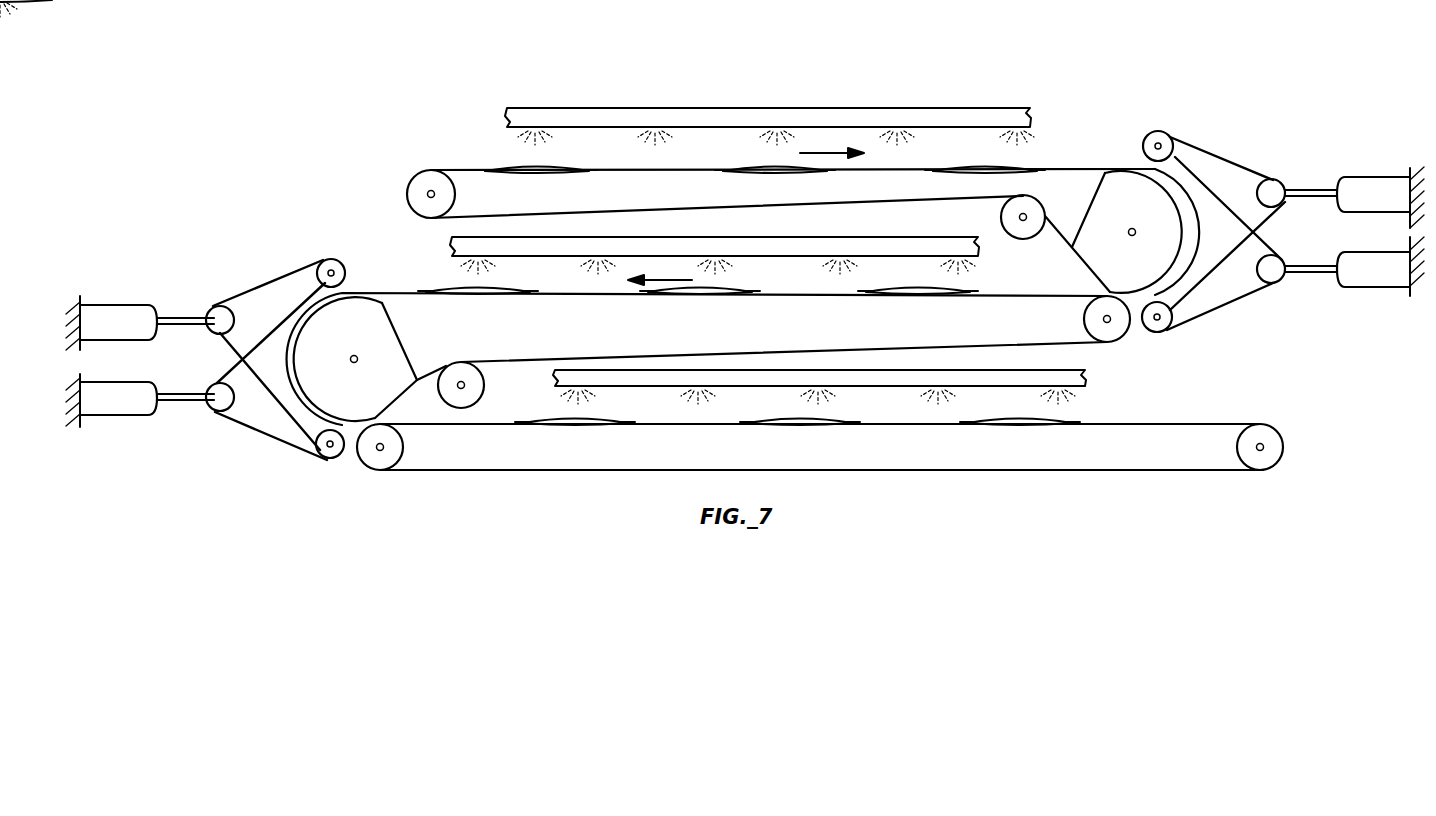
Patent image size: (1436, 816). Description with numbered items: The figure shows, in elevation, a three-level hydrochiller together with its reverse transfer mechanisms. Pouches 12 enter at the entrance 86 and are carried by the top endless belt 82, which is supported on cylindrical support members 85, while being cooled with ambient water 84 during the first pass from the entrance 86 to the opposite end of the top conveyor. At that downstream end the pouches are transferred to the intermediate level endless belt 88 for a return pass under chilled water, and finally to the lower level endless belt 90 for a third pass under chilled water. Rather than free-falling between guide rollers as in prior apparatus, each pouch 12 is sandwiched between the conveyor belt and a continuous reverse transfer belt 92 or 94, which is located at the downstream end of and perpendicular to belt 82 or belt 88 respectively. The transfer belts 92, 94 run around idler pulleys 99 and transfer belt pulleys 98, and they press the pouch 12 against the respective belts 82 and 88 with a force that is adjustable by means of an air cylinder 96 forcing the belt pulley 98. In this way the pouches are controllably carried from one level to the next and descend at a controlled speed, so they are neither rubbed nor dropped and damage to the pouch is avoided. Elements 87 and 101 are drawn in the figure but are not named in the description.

The pouch 12 is at (729, 168).
The endless belt 82 is at (457, 170).
The ambient water 84 is at (617, 107).
The cylindrical support member 85 is at (344, 308).
The entrance 86 is at (452, 121).
The roller flat section 87 is at (386, 346).
The intermediate level endless belt 88 is at (848, 300).
The lower level endless belt 90 is at (503, 426).
The reverse transfer belt 92 is at (273, 280).
The reverse transfer belt 94 is at (214, 364).
The air cylinder 96 is at (118, 310).
The transfer belt pulley 98 is at (212, 306).
The idler pulley 99 is at (331, 258).
The return roller 101 is at (375, 456).